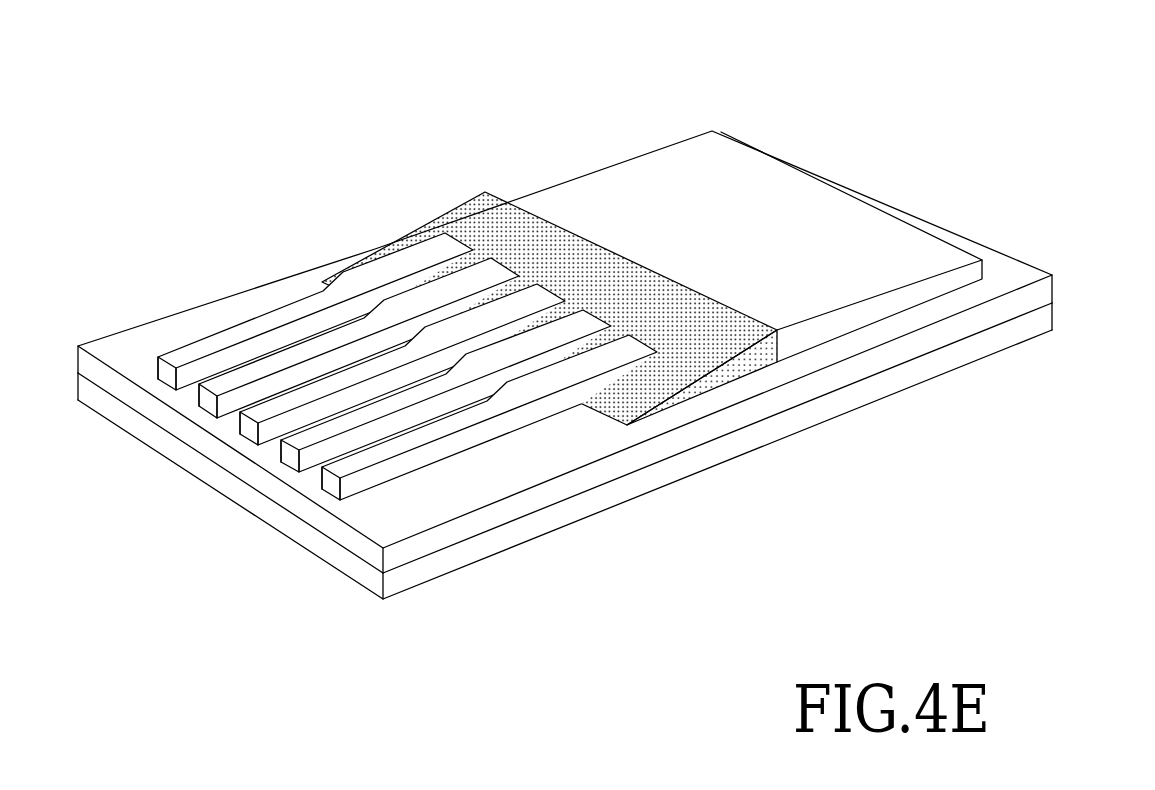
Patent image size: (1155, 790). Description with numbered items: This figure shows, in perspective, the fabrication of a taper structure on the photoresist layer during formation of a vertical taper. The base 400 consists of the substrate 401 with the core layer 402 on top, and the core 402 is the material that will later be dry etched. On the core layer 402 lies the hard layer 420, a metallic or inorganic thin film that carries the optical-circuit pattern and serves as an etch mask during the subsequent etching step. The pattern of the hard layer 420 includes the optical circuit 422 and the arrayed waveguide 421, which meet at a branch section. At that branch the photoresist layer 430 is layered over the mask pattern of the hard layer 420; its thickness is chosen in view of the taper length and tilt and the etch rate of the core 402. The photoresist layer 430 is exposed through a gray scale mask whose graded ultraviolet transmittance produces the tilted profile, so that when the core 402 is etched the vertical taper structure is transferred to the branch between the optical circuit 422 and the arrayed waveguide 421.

The substrate board 400 is at (602, 365).
The substrate 401 is at (1000, 337).
The core layer 402 is at (1033, 297).
The hard layer 420 is at (570, 309).
The arrayed waveguide 421 is at (455, 418).
The optical circuit 422 is at (843, 212).
The photoresist layer 430 is at (760, 363).